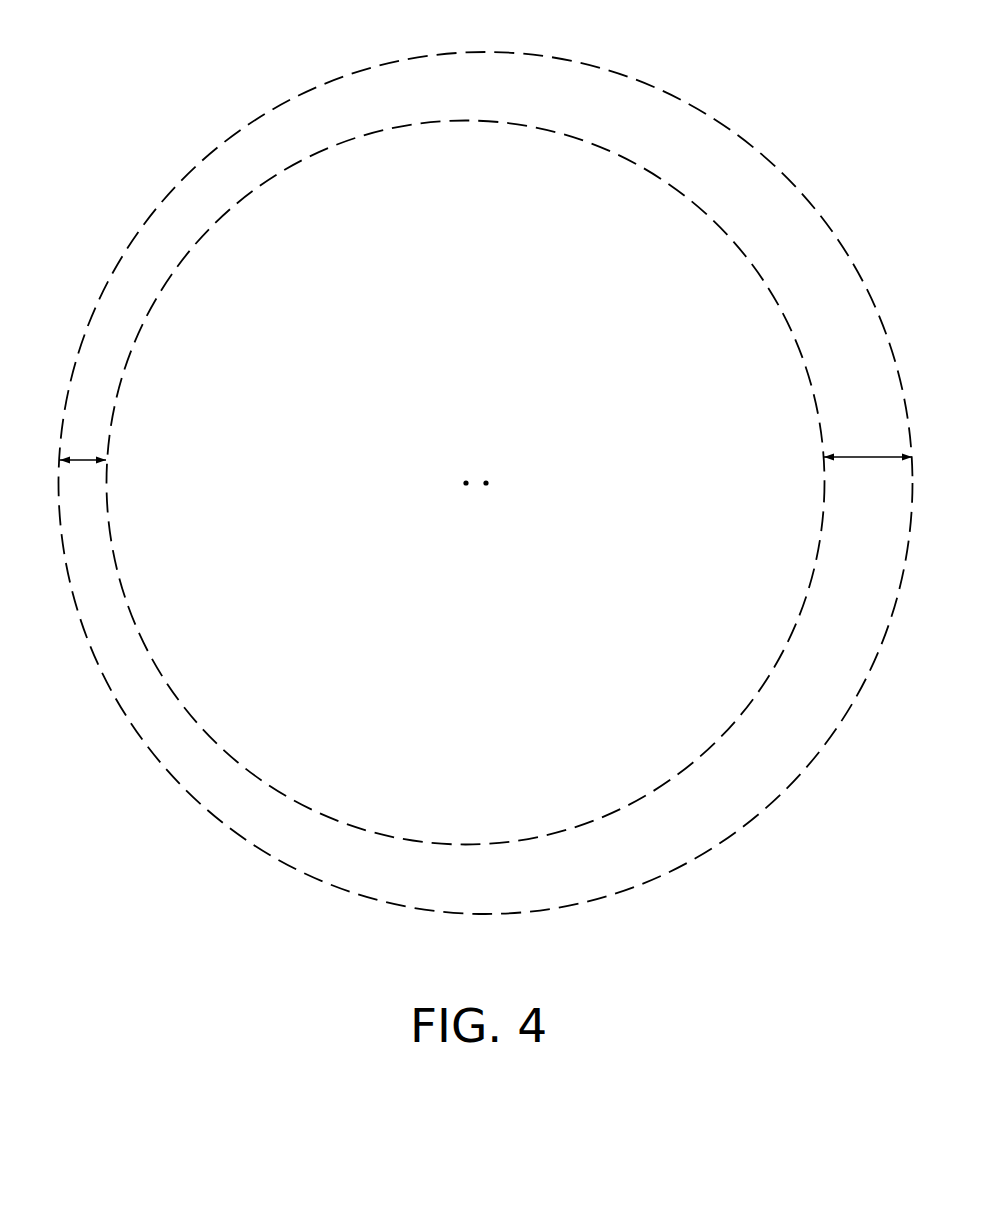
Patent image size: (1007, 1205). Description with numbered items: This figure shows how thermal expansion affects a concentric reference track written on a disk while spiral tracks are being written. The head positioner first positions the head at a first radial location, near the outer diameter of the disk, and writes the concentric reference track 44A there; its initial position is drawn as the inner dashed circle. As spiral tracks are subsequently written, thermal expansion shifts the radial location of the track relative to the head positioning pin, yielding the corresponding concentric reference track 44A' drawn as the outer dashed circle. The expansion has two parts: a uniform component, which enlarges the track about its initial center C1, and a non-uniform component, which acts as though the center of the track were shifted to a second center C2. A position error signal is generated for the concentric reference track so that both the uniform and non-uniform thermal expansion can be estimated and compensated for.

The concentric reference track after thermal expansion 44A' is at (486, 462).
The concentric reference track 44A is at (466, 483).
The initial center C1 is at (458, 492).
The shifted center C2 is at (494, 492).